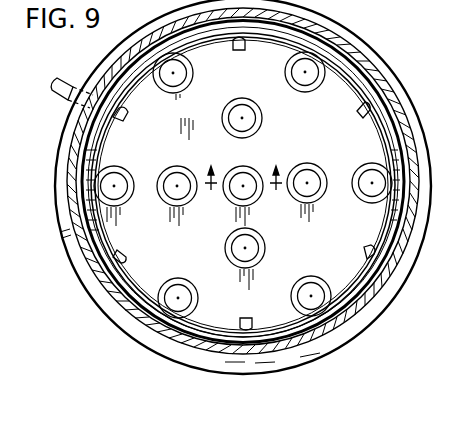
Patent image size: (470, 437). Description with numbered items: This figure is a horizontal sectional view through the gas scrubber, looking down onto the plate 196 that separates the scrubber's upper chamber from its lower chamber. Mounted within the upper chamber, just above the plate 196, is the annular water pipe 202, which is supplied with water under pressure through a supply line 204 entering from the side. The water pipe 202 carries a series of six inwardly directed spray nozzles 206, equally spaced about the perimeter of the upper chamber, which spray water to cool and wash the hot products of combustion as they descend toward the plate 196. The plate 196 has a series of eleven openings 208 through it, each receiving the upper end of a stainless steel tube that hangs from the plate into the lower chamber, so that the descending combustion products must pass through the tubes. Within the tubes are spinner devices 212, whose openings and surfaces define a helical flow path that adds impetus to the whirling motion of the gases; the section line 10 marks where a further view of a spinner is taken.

The section line indicator 10 is at (246, 169).
The plate 196 is at (162, 232).
The annular water pipe 202 is at (392, 225).
The supply line 204 is at (66, 68).
The spray nozzles 206 is at (236, 50).
The openings 208 is at (317, 277).
The spinner devices 212 is at (238, 252).